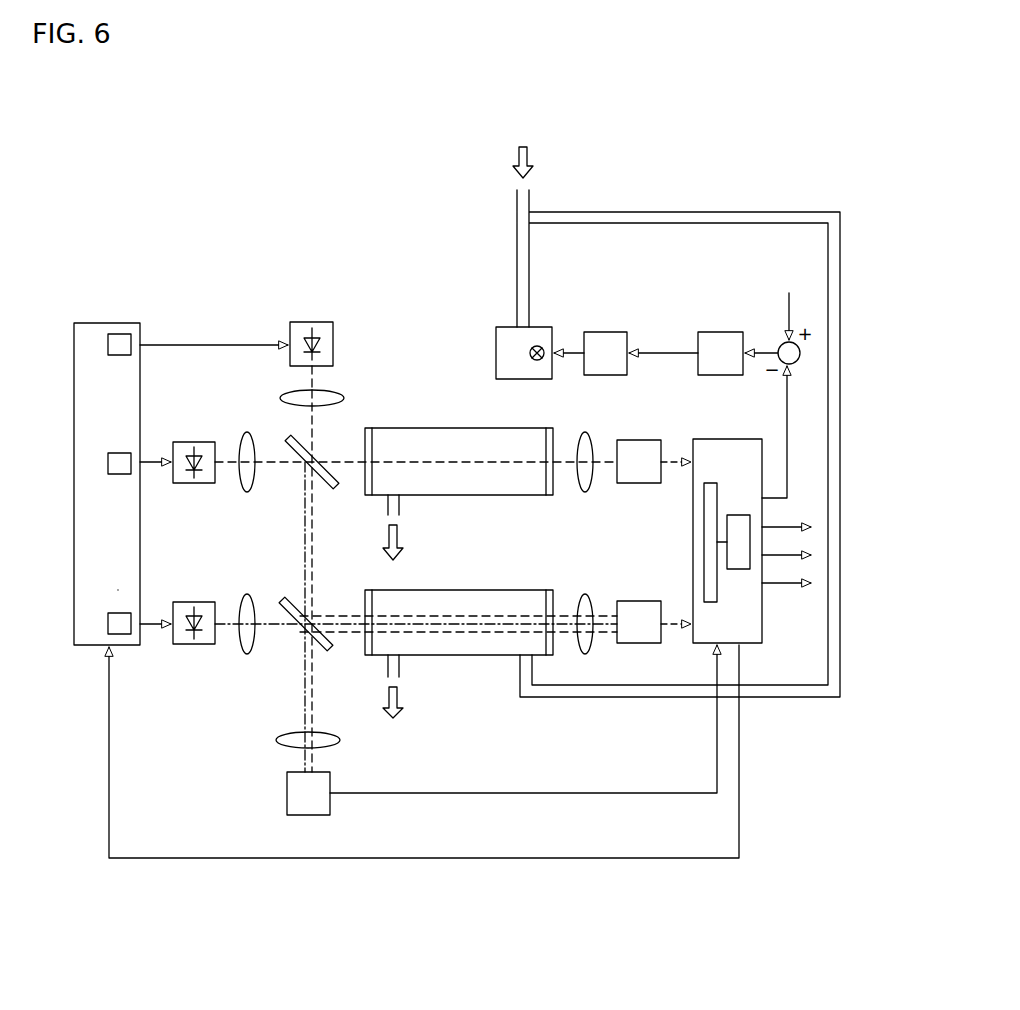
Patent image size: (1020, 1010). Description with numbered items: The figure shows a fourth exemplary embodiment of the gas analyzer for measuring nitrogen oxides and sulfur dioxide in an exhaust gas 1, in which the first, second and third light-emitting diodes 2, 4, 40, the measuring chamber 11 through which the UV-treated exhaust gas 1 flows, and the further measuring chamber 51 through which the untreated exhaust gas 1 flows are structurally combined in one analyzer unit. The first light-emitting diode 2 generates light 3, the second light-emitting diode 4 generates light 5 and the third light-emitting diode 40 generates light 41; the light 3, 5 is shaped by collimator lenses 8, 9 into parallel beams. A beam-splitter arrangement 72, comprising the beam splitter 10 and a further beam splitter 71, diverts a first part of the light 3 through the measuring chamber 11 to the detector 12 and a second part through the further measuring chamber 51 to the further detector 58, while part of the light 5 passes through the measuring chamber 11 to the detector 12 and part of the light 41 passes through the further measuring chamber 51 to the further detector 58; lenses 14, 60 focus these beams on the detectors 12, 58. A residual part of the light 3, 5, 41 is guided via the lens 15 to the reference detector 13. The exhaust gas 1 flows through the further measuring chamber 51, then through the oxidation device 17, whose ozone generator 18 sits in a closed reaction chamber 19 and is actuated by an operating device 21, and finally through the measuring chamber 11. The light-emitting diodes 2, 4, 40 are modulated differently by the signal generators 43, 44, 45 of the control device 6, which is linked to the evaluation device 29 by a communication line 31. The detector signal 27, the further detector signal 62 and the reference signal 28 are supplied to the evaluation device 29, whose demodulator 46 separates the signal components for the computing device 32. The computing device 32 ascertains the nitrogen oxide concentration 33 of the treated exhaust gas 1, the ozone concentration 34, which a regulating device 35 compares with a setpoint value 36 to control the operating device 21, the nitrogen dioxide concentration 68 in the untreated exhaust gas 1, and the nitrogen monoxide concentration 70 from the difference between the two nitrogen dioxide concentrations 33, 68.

The exhaust gas 1 is at (515, 157).
The first light-emitting diode 2 is at (194, 442).
The light 3 is at (268, 460).
The second light-emitting diode 4 is at (310, 322).
The light 5 is at (305, 378).
The control device 6 is at (104, 323).
The collimator lens 8 is at (243, 438).
The collimator lens 9 is at (338, 395).
The beam splitter 10 is at (327, 482).
The measuring chamber 11 is at (436, 428).
The detector 12 is at (639, 440).
The reference detector 13 is at (287, 795).
The lens 14 is at (589, 493).
The lens 15 is at (277, 742).
The oxidation device 17 is at (590, 288).
The ozone generator 18 is at (538, 345).
The reaction chamber 19 is at (496, 353).
The operating device 21 is at (605, 332).
The detector signal 27 is at (676, 460).
The reference signal 28 is at (575, 792).
The evaluation device 29 is at (726, 439).
The communication line 31 is at (527, 857).
The computing device 32 is at (738, 515).
The nitrogen oxide concentration 33 is at (803, 525).
The ozone concentration 34 is at (787, 418).
The regulating device 35 is at (720, 332).
The setpoint value 36 is at (789, 298).
The third light-emitting diode 40 is at (194, 602).
The light 41 is at (266, 630).
The signal generator 43 is at (118, 475).
The signal generator 44 is at (116, 356).
The signal generator 45 is at (118, 590).
The demodulator 46 is at (717, 598).
The further measuring chamber 51 is at (448, 590).
The further detector 58 is at (639, 601).
The lens 60 is at (588, 594).
The further detector signal 62 is at (676, 630).
The nitrogen dioxide concentration 68 is at (800, 585).
The nitrogen monoxide concentration 70 is at (775, 586).
The further beam splitter 71 is at (288, 602).
The beam-splitter arrangement 72 is at (288, 492).